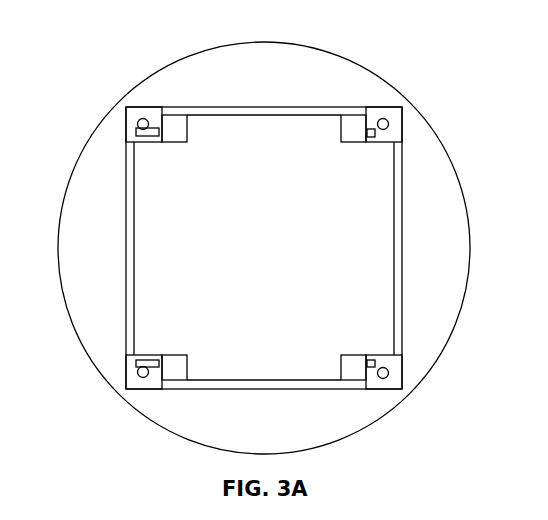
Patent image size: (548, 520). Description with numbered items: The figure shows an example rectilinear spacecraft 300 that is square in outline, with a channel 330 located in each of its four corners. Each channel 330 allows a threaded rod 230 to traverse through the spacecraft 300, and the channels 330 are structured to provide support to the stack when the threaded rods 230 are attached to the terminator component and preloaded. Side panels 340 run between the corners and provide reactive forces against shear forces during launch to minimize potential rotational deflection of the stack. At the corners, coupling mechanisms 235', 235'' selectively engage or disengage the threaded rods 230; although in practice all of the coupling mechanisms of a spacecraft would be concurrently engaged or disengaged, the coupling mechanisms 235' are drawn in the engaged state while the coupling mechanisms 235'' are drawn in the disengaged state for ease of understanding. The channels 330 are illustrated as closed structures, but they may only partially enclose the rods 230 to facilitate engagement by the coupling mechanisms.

The spacecraft 300 is at (352, 407).
The side panels 340 is at (243, 107).
The channel 330 is at (126, 118).
The threaded rod 230 is at (141, 119).
The coupling mechanism 235' is at (179, 247).
The coupling mechanism 235'' is at (332, 248).